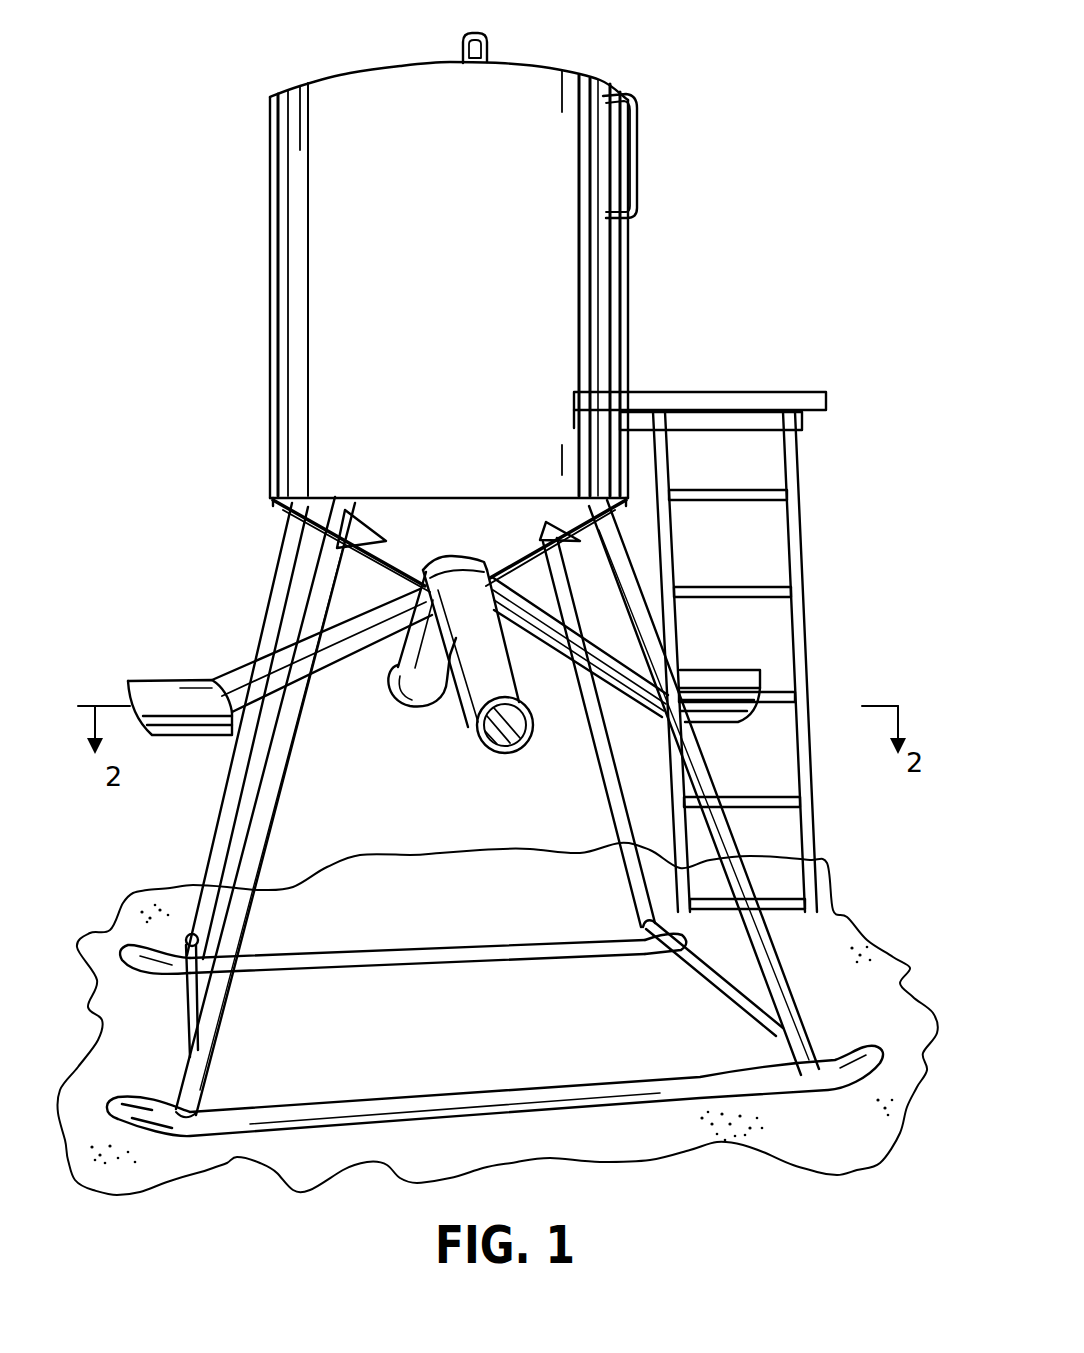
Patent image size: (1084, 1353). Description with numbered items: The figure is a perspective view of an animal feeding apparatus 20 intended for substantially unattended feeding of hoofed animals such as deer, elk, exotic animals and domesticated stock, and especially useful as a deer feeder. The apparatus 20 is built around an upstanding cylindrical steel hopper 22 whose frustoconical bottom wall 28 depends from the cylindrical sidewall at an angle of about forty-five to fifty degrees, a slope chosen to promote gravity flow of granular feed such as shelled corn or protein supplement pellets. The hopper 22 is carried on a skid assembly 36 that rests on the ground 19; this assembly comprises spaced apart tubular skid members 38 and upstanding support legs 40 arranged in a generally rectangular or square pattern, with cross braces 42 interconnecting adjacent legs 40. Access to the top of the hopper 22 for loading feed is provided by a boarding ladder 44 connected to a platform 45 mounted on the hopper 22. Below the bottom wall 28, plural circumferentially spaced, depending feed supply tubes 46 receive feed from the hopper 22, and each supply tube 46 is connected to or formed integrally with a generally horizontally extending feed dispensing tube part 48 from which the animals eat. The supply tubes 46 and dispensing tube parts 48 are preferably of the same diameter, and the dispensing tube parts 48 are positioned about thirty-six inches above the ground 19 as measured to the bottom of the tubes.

The ground 19 is at (742, 1118).
The animal feeding apparatus 20 is at (238, 296).
The hopper 22 is at (640, 236).
The bottom wall 28 is at (292, 522).
The skid assembly 36 is at (470, 912).
The tubular skid members 38 is at (346, 948).
The support legs 40 is at (240, 808).
The cross braces 42 is at (215, 992).
The boarding ladder 44 is at (800, 648).
The platform 45 is at (785, 386).
The feed supply tubes 46 is at (362, 648).
The feed dispensing tube part 48 is at (192, 740).